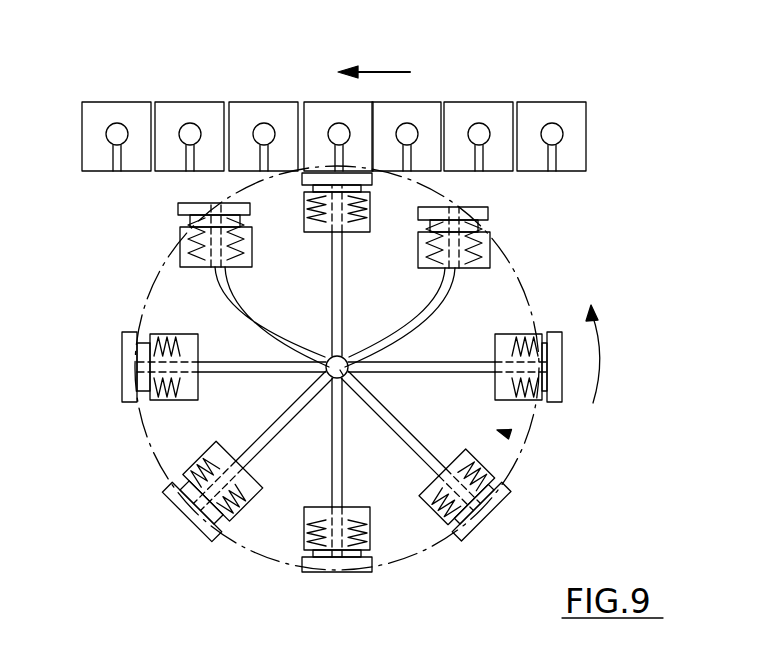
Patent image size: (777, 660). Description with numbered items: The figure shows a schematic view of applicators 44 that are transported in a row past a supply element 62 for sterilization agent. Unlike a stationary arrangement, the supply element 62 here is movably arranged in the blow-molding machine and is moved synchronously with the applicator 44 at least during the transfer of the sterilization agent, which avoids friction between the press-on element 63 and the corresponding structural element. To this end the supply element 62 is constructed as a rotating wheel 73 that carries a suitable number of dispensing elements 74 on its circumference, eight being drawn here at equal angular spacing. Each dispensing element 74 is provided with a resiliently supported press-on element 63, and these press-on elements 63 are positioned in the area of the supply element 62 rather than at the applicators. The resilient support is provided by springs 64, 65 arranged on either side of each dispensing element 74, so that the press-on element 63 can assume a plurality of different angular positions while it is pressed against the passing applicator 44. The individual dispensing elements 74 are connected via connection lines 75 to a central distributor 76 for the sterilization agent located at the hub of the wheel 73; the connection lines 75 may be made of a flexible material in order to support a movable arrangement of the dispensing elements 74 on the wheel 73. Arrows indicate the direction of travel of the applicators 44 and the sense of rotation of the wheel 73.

The applicator 44 is at (127, 101).
The supply element 62 is at (574, 262).
The press-on element 63 is at (486, 212).
The spring 64 is at (157, 337).
The spring 65 is at (157, 403).
The rotating wheel 73 is at (510, 434).
The dispensing element 74 is at (190, 410).
The connection line 75 is at (268, 442).
The central distributor 76 is at (348, 380).